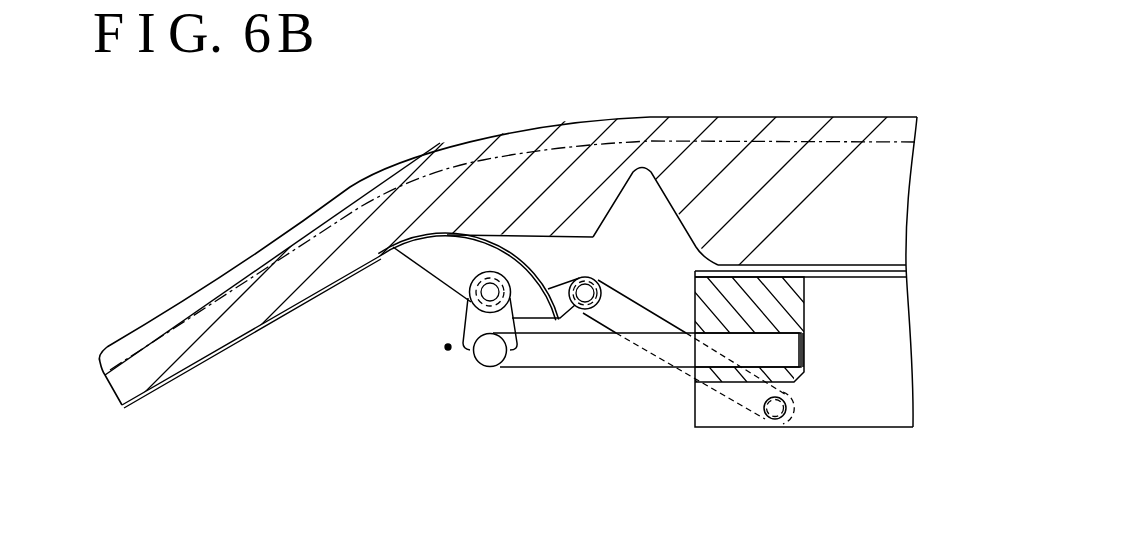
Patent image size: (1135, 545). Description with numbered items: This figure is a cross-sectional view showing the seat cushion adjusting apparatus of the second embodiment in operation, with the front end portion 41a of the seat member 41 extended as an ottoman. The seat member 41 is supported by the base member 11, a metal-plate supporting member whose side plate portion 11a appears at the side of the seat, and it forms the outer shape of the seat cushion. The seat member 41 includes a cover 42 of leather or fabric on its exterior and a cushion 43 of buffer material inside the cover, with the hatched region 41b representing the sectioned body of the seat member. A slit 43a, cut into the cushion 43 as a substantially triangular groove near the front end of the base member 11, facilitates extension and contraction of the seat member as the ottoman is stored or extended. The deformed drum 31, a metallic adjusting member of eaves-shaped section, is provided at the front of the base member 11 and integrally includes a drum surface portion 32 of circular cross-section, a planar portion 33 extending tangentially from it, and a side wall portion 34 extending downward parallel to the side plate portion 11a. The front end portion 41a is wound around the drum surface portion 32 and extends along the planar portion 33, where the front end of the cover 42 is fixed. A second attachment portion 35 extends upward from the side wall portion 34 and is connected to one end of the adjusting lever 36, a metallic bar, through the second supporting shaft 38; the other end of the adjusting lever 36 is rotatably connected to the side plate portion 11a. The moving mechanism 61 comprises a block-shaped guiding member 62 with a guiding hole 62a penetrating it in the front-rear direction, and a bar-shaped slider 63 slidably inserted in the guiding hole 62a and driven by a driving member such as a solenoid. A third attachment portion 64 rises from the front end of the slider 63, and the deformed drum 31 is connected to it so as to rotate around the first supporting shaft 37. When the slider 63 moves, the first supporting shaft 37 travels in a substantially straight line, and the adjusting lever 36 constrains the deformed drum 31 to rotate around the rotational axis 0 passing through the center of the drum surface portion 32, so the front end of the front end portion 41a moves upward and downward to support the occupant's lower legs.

The seat member 41 is at (425, 96).
The front end portion 41a is at (223, 281).
The cover body portion 41b is at (740, 141).
The cover 42 is at (385, 163).
The cushion 43 is at (440, 145).
The slit 43a is at (671, 205).
The deformed drum 31 is at (503, 237).
The drum surface portion 32 is at (507, 250).
The planar portion 33 is at (270, 321).
The side wall portion 34 is at (413, 257).
The second attachment portion 35 is at (556, 287).
The adjusting lever 36 is at (663, 318).
The first supporting shaft 37 is at (483, 280).
The second supporting shaft 38 is at (617, 275).
The base member 11 is at (882, 271).
The side plate portion 11a is at (828, 271).
The moving mechanism 61 is at (831, 382).
The guiding member 62 is at (792, 310).
The guiding hole 62a is at (800, 342).
The slider 63 is at (603, 358).
The third attachment portion 64 is at (466, 343).
The rotational axis 0 is at (446, 350).